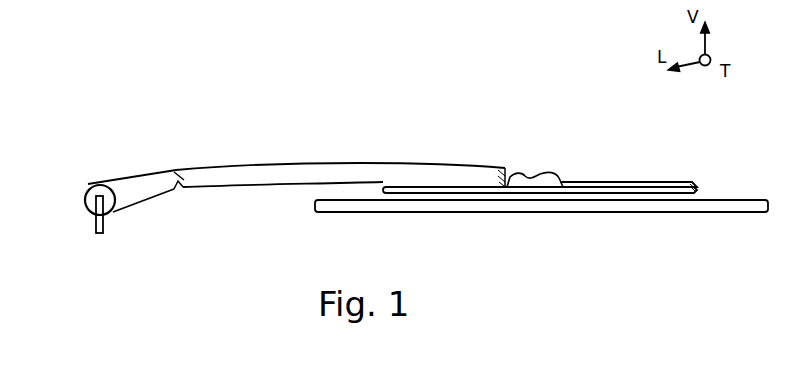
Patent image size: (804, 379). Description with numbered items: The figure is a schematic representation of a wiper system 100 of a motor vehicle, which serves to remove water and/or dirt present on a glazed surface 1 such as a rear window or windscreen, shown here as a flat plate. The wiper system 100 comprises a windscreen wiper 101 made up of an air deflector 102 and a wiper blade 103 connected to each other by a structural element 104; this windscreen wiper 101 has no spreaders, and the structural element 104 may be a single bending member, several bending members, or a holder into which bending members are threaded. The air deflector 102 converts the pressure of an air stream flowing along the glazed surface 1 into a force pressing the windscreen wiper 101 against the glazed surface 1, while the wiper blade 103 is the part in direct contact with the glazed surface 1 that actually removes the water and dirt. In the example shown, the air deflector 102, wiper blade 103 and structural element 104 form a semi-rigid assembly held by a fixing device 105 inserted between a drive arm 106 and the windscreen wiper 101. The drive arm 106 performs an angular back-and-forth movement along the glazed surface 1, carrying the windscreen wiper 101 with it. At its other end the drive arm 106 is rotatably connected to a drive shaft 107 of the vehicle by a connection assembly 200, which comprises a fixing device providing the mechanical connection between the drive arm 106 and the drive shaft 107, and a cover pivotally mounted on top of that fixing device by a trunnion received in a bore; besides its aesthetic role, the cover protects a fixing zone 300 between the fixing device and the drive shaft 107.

The wiper system 100 is at (380, 92).
The glazed surface 1 is at (657, 213).
The windscreen wiper 101 is at (704, 183).
The air deflector 102 is at (600, 185).
The wiper blade 103 is at (610, 202).
The structural element 104 is at (648, 186).
The fixing device 105 is at (547, 173).
The drive arm 106 is at (290, 165).
The drive shaft 107 is at (93, 226).
The connection assembly 200 is at (141, 163).
The fixing zone 300 is at (96, 183).